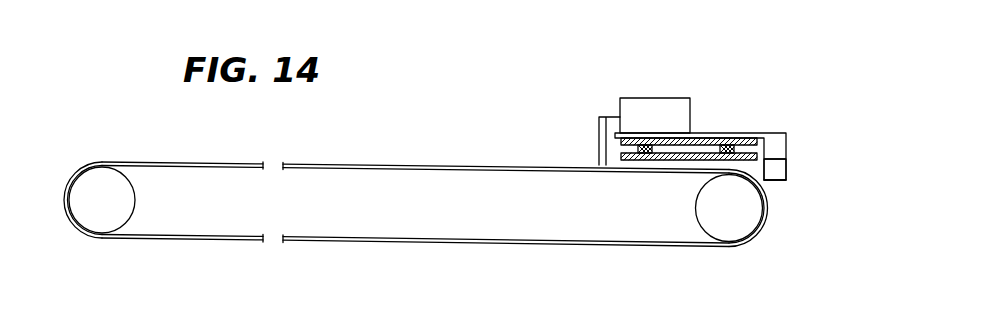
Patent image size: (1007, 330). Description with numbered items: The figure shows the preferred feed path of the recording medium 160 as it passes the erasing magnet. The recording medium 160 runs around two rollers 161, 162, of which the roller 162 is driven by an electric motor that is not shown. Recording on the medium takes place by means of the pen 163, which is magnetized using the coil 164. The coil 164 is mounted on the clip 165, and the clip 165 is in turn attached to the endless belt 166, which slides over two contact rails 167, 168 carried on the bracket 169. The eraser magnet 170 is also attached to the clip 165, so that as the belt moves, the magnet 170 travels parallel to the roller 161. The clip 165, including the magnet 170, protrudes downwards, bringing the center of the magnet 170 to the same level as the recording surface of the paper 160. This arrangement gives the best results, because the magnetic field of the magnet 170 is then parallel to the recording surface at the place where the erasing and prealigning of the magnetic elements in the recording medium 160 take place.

The recording medium 160 is at (393, 165).
The roller 161 is at (740, 225).
The roller 162 is at (90, 178).
The pen 163 is at (599, 146).
The coil 164 is at (670, 108).
The clip 165 is at (757, 133).
The endless belt 166 is at (698, 138).
The contact rail 167 is at (645, 145).
The contact rail 168 is at (727, 146).
The bracket 169 is at (780, 168).
The eraser magnet 170 is at (777, 181).